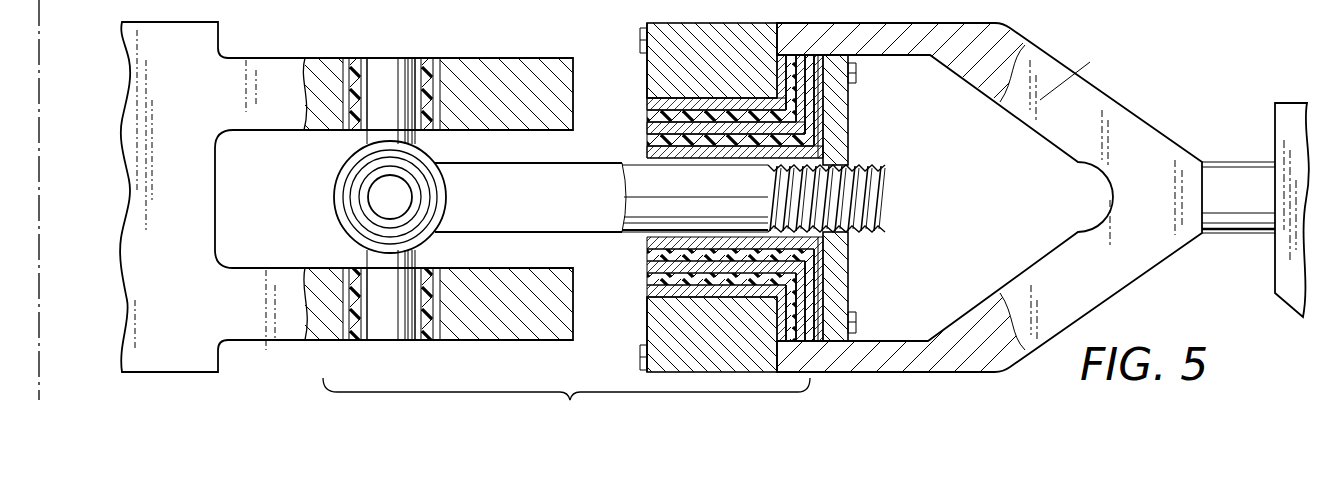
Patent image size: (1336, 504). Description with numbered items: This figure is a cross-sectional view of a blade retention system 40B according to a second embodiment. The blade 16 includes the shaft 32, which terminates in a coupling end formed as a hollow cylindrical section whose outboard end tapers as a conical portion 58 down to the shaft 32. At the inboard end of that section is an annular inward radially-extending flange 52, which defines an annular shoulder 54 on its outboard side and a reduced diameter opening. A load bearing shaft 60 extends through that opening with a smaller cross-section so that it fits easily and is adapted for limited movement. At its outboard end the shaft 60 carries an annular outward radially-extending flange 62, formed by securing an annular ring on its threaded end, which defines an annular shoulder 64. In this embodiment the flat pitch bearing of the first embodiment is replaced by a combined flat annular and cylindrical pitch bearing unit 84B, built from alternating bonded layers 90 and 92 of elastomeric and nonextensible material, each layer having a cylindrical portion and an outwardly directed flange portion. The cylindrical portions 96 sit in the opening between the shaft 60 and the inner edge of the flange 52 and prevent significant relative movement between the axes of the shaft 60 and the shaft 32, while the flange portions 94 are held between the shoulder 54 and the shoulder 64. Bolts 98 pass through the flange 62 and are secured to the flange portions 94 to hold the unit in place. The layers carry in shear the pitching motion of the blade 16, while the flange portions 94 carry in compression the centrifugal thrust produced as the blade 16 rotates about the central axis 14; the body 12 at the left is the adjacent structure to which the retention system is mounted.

The housing body 12 is at (222, 43).
The central axis 14 is at (41, 22).
The blade 16 is at (1288, 127).
The shaft 32 is at (1245, 203).
The blade retention system 40B is at (566, 407).
The annular inward radially-extending flange 52 is at (647, 63).
The annular shoulder 54 is at (780, 43).
The conical portion 58 is at (1090, 93).
The load bearing shaft 60 is at (566, 168).
The annular outward radially-extending flange 62 is at (850, 124).
The annular shoulder 64 is at (846, 150).
The combined pitch bearing unit 84B is at (712, 93).
The elastomeric layers 90 is at (647, 130).
The nonextensible layers 92 is at (647, 100).
The flange portions 94 is at (812, 60).
The cylindrical portions 96 is at (718, 150).
The bolts 98 is at (858, 76).